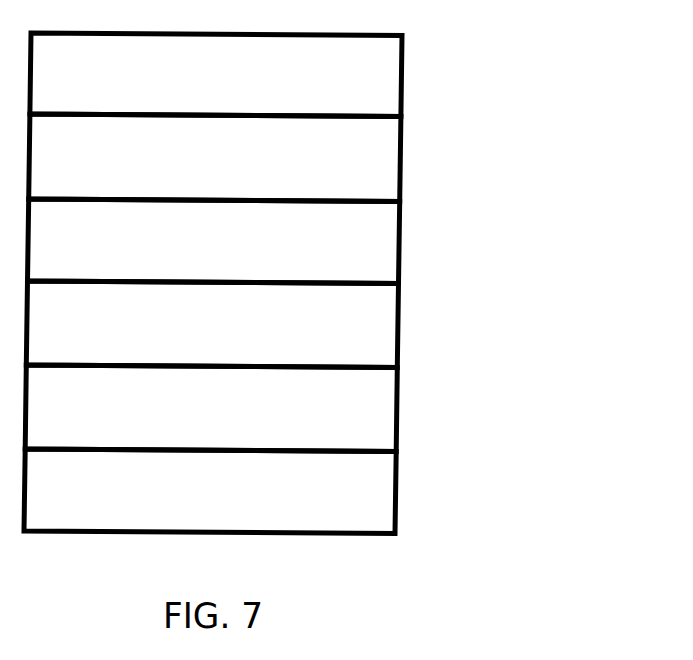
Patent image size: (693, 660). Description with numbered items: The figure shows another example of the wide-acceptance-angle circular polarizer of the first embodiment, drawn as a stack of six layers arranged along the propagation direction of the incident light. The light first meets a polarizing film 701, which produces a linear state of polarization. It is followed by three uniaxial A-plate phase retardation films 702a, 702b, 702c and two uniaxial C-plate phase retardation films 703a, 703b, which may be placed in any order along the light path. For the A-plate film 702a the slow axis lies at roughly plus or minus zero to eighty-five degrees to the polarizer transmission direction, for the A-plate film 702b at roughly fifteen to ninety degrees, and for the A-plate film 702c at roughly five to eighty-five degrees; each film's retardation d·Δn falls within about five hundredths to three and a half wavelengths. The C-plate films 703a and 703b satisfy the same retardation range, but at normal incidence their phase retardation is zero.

The polarizing film 701 is at (403, 65).
The uniaxial A-plate phase retardation film 702a is at (402, 162).
The uniaxial C-plate phase retardation film 703a is at (401, 247).
The uniaxial A-plate phase retardation film 702b is at (400, 328).
The uniaxial C-plate phase retardation film 703b is at (399, 413).
The uniaxial A-plate phase retardation film 702c is at (398, 495).